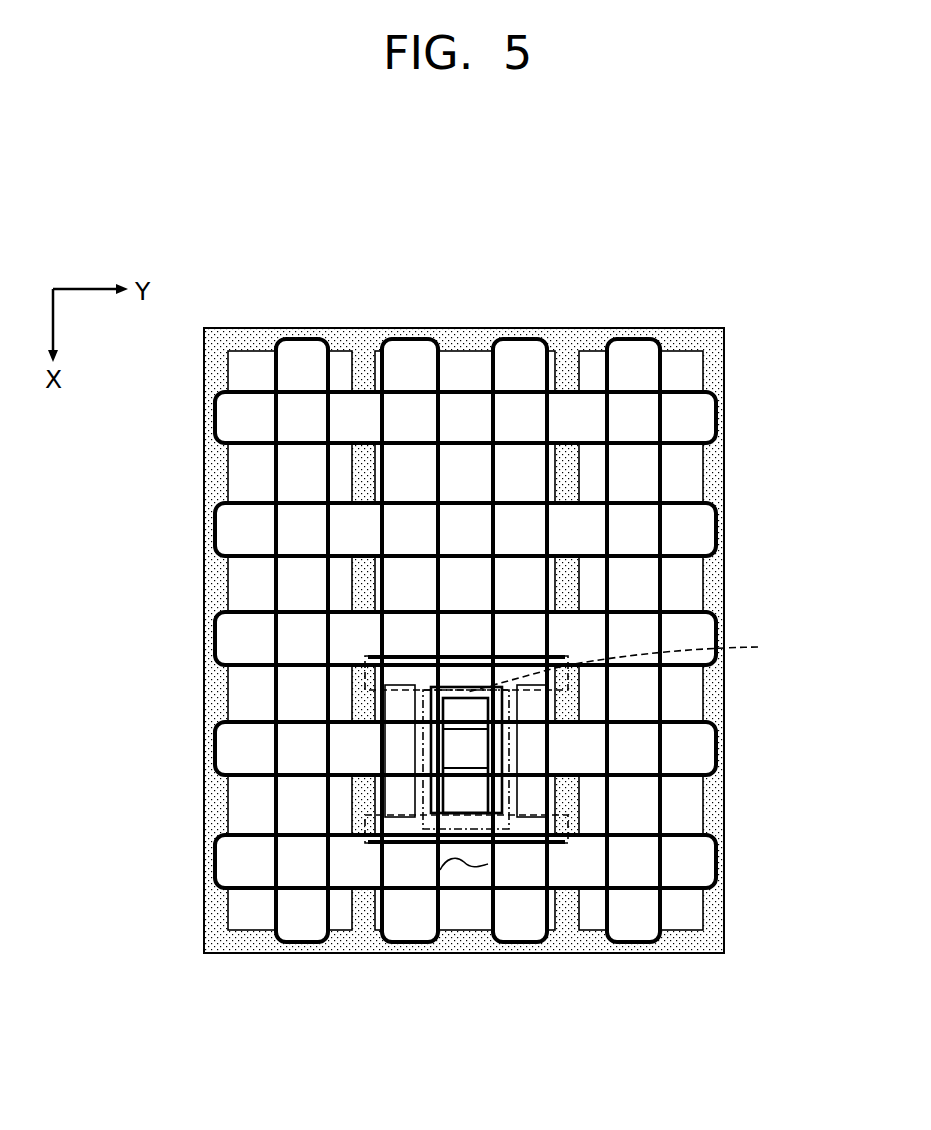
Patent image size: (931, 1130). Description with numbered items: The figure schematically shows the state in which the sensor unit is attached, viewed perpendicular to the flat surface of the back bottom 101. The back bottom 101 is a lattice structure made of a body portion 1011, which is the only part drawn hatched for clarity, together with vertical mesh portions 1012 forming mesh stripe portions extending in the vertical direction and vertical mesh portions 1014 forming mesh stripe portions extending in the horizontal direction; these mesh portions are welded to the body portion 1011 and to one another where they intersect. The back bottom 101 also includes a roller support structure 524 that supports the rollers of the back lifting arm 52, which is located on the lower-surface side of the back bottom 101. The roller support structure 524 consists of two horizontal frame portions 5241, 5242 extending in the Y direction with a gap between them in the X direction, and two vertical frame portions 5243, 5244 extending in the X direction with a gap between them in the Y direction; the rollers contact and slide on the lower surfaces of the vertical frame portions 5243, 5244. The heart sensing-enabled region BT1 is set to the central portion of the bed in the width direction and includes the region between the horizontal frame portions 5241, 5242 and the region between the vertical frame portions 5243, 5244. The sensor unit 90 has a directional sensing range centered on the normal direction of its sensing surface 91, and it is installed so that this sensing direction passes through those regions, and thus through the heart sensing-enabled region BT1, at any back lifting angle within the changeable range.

The back bottom 101 is at (569, 326).
The body portion 1011 is at (713, 798).
The vertical mesh portions 1012 is at (661, 746).
The vertical mesh portions 1014 is at (638, 885).
The roller support structure 524 is at (457, 656).
The horizontal frame portion 5241 is at (397, 673).
The horizontal frame portion 5242 is at (397, 827).
The vertical frame portion 5243 is at (418, 713).
The vertical frame portion 5244 is at (513, 706).
The back lifting arm 52 is at (315, 778).
The sensor unit 90 is at (463, 753).
The sensing surface 91 is at (462, 737).
The heart sensing-enabled region BT1 is at (647, 666).